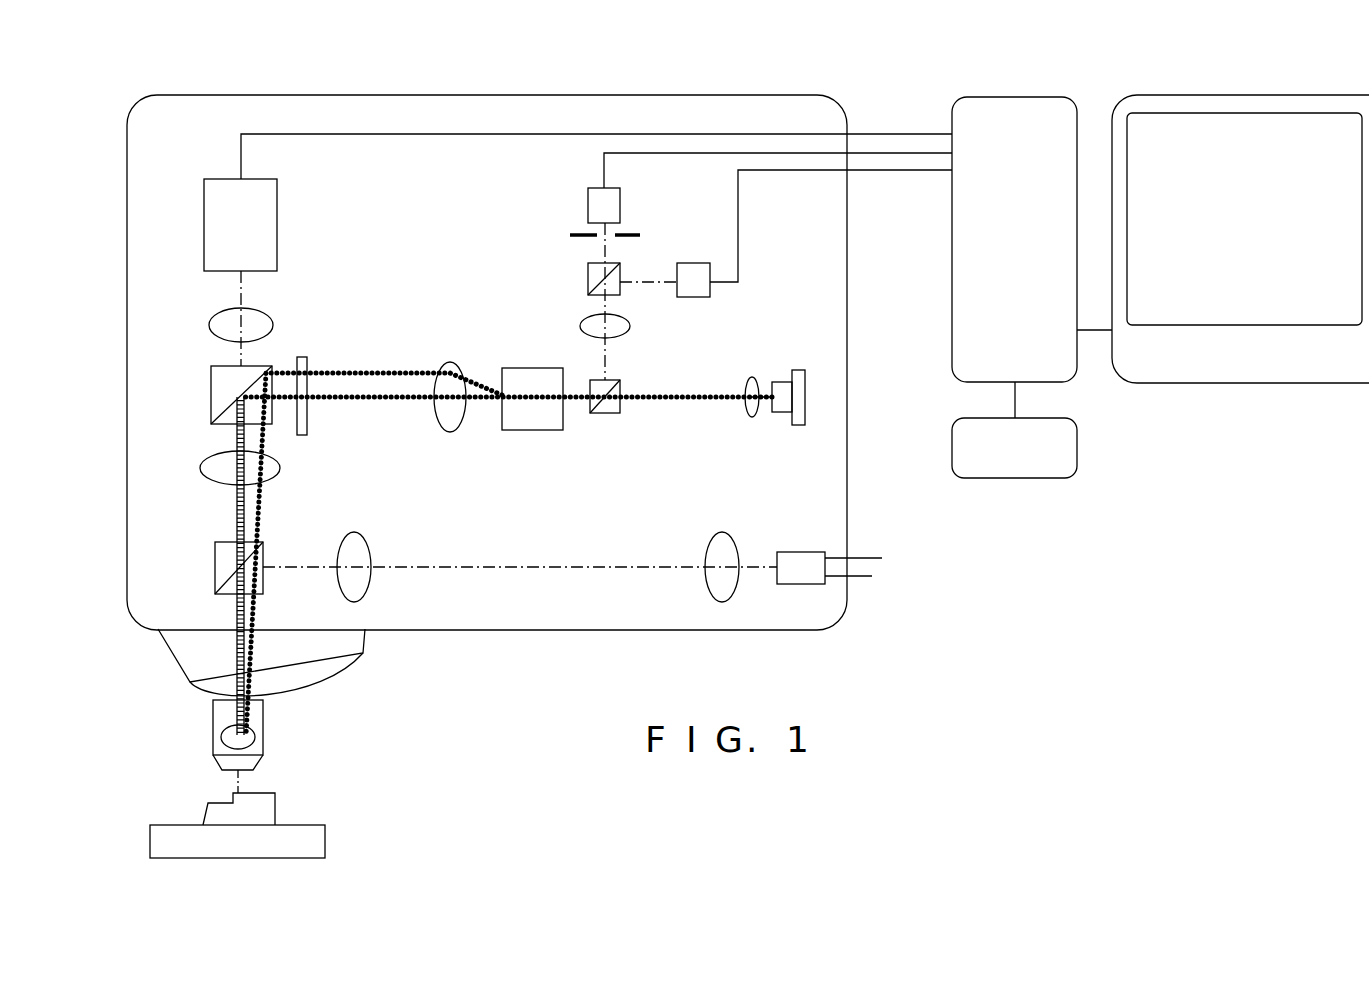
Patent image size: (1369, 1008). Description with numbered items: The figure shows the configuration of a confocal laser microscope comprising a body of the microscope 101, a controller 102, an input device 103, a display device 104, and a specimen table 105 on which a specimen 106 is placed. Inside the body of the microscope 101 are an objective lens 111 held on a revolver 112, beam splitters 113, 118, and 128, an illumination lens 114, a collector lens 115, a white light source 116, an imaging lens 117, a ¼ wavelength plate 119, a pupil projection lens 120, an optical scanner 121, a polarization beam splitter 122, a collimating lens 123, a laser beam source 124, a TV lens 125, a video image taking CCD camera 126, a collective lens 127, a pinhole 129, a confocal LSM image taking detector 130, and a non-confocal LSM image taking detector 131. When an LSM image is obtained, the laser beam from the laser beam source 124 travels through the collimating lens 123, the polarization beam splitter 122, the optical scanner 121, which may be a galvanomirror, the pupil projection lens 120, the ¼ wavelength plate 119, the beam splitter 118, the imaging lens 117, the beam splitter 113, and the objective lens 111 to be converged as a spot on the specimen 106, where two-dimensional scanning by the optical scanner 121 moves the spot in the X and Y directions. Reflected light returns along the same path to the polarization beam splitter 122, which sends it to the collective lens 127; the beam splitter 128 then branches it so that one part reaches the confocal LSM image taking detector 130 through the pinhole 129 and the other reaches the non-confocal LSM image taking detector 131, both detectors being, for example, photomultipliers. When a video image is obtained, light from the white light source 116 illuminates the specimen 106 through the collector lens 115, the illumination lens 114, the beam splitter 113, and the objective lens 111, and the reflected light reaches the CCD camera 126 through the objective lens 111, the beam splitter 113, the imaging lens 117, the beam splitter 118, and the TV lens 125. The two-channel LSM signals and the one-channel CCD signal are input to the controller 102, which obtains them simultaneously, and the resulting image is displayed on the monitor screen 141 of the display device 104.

The body of the microscope 101 is at (127, 410).
The controller 102 is at (1015, 97).
The input device 103 is at (1015, 478).
The display device 104 is at (1248, 95).
The specimen table 105 is at (150, 840).
The specimen 106 is at (203, 805).
The objective lens 111 is at (213, 729).
The revolver 112 is at (313, 690).
The beam splitter 113 is at (215, 565).
The illumination lens 114 is at (371, 548).
The collector lens 115 is at (705, 550).
The white light source 116 is at (790, 552).
The imaging lens 117 is at (200, 468).
The beam splitter 118 is at (211, 392).
The ¼ wavelength plate 119 is at (307, 362).
The pupil projection lens 120 is at (450, 363).
The optical scanner 121 is at (533, 368).
The polarization beam splitter 122 is at (620, 385).
The collimating lens 123 is at (751, 377).
The laser beam source 124 is at (798, 370).
The TV lens 125 is at (209, 325).
The video image taking CCD camera 126 is at (204, 200).
The collective lens 127 is at (630, 326).
The beam splitter 128 is at (588, 280).
The pinhole 129 is at (570, 235).
The confocal LSM image taking detector 130 is at (588, 205).
The non-confocal LSM image taking detector 131 is at (693, 263).
The monitor screen 141 is at (1245, 325).